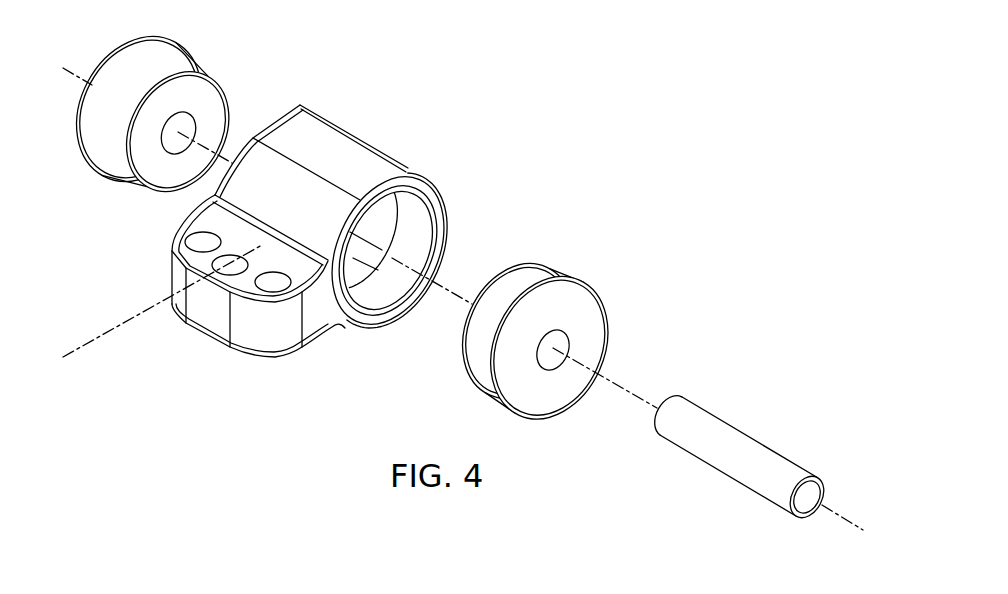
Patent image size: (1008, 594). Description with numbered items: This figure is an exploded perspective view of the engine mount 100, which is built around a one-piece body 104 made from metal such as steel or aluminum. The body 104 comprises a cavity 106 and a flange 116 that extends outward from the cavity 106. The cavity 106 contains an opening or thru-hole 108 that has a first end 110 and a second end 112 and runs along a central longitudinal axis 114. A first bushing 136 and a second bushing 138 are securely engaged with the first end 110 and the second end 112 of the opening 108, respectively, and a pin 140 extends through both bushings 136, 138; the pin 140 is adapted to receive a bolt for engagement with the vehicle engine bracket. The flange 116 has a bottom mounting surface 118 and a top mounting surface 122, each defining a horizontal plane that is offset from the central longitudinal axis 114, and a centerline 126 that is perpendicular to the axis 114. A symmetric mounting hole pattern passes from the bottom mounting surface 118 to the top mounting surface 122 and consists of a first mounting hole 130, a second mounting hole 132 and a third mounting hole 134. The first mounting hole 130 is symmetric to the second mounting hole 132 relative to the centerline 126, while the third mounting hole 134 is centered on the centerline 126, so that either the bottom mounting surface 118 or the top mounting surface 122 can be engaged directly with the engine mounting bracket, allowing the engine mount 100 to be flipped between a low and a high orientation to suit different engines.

The engine mount 100 is at (331, 233).
The one-piece body 104 is at (333, 133).
The cavity 106 is at (420, 228).
The opening or thru-hole 108 is at (358, 250).
The first end 110 is at (253, 137).
The second end 112 is at (372, 295).
The central longitudinal axis 114 is at (640, 373).
The flange 116 is at (308, 335).
The bottom mounting surface 118 is at (207, 335).
The top mounting surface 122 is at (242, 252).
The centerline 126 is at (118, 325).
The first mounting hole 130 is at (198, 236).
The second mounting hole 132 is at (225, 274).
The third mounting hole 134 is at (275, 290).
The first bushing 136 is at (199, 62).
The second bushing 138 is at (556, 269).
The pin 140 is at (751, 434).